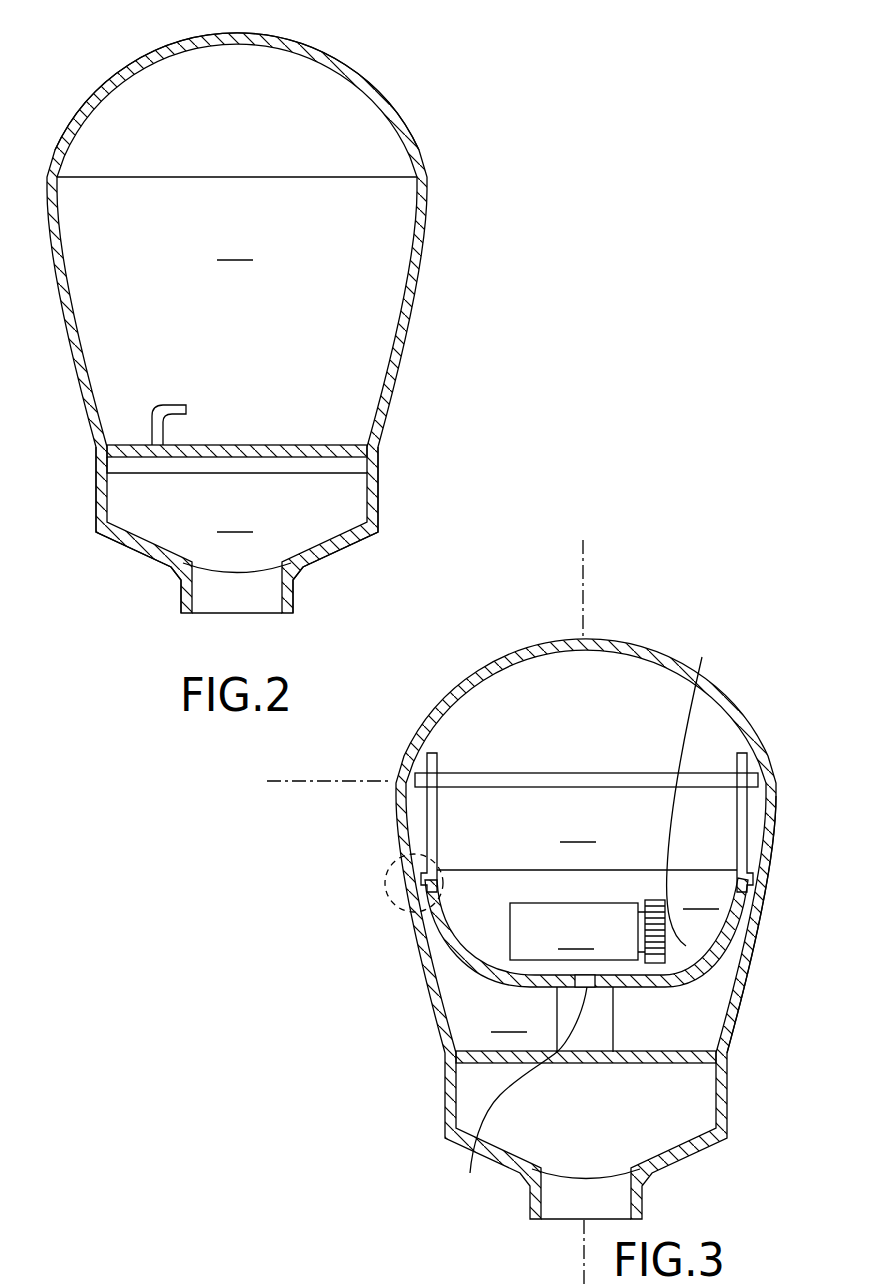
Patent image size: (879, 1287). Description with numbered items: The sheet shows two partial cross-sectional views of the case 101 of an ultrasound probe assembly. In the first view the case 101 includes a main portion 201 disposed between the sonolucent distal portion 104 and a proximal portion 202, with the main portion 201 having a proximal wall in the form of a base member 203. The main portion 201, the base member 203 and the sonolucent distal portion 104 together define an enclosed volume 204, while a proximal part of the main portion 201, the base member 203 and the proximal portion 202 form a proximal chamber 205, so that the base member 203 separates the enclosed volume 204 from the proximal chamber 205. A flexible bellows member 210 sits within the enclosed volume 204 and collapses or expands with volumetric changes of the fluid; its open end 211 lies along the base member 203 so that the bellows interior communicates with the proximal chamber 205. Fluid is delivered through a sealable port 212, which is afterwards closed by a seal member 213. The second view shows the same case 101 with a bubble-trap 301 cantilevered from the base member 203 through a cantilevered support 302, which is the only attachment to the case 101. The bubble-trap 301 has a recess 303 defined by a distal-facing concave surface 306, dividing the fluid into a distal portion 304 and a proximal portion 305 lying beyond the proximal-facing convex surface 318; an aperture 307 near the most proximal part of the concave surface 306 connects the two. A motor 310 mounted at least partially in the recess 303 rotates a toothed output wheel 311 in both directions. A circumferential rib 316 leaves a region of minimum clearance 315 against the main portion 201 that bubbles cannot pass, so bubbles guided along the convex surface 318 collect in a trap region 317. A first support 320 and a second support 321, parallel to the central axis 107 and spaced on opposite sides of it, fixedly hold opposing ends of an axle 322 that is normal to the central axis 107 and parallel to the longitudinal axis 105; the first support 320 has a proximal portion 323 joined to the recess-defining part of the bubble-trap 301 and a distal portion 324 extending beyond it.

In FIG. 2, the case 101 is at (479, 147).
In FIG. 3, the case 101 is at (753, 671).
In FIG. 2, the sonolucent distal portion 104 is at (392, 96).
In FIG. 3, the longitudinal axis 105 is at (273, 783).
In FIG. 3, the central axis 107 is at (590, 578).
In FIG. 2, the main portion 201 is at (428, 222).
In FIG. 3, the main portion 201 is at (423, 940).
In FIG. 2, the proximal portion 202 is at (379, 513).
In FIG. 2, the base member 203 is at (350, 444).
In FIG. 3, the base member 203 is at (677, 1051).
In FIG. 2, the enclosed volume 204 is at (235, 248).
In FIG. 2, the proximal chamber 205 is at (235, 520).
In FIG. 2, the bellows member 210 is at (150, 410).
In FIG. 2, the open end 211 is at (160, 457).
In FIG. 2, the sealable port 212 is at (318, 447).
In FIG. 2, the seal member 213 is at (330, 458).
In FIG. 3, the bubble-trap 301 is at (751, 917).
In FIG. 3, the cantilevered support 302 is at (614, 1021).
In FIG. 3, the recess 303 is at (701, 897).
In FIG. 3, the distal portion 304 is at (587, 844).
In FIG. 3, the proximal portion 305 is at (509, 1020).
In FIG. 3, the distal-facing concave surface 306 is at (692, 789).
In FIG. 3, the aperture 307 is at (521, 1095).
In FIG. 3, the motor 310 is at (577, 931).
In FIG. 3, the output wheel 311 is at (666, 936).
In FIG. 3, the region of minimum clearance 315 is at (384, 882).
In FIG. 3, the circumferential rib 316 is at (418, 912).
In FIG. 3, the trap region 317 is at (440, 943).
In FIG. 3, the proximal-facing convex surface 318 is at (480, 963).
In FIG. 3, the first support 320 is at (749, 817).
In FIG. 3, the second support 321 is at (428, 828).
In FIG. 3, the axle 322 is at (765, 778).
In FIG. 3, the proximal portion 323 is at (749, 856).
In FIG. 3, the distal portion 324 is at (755, 734).